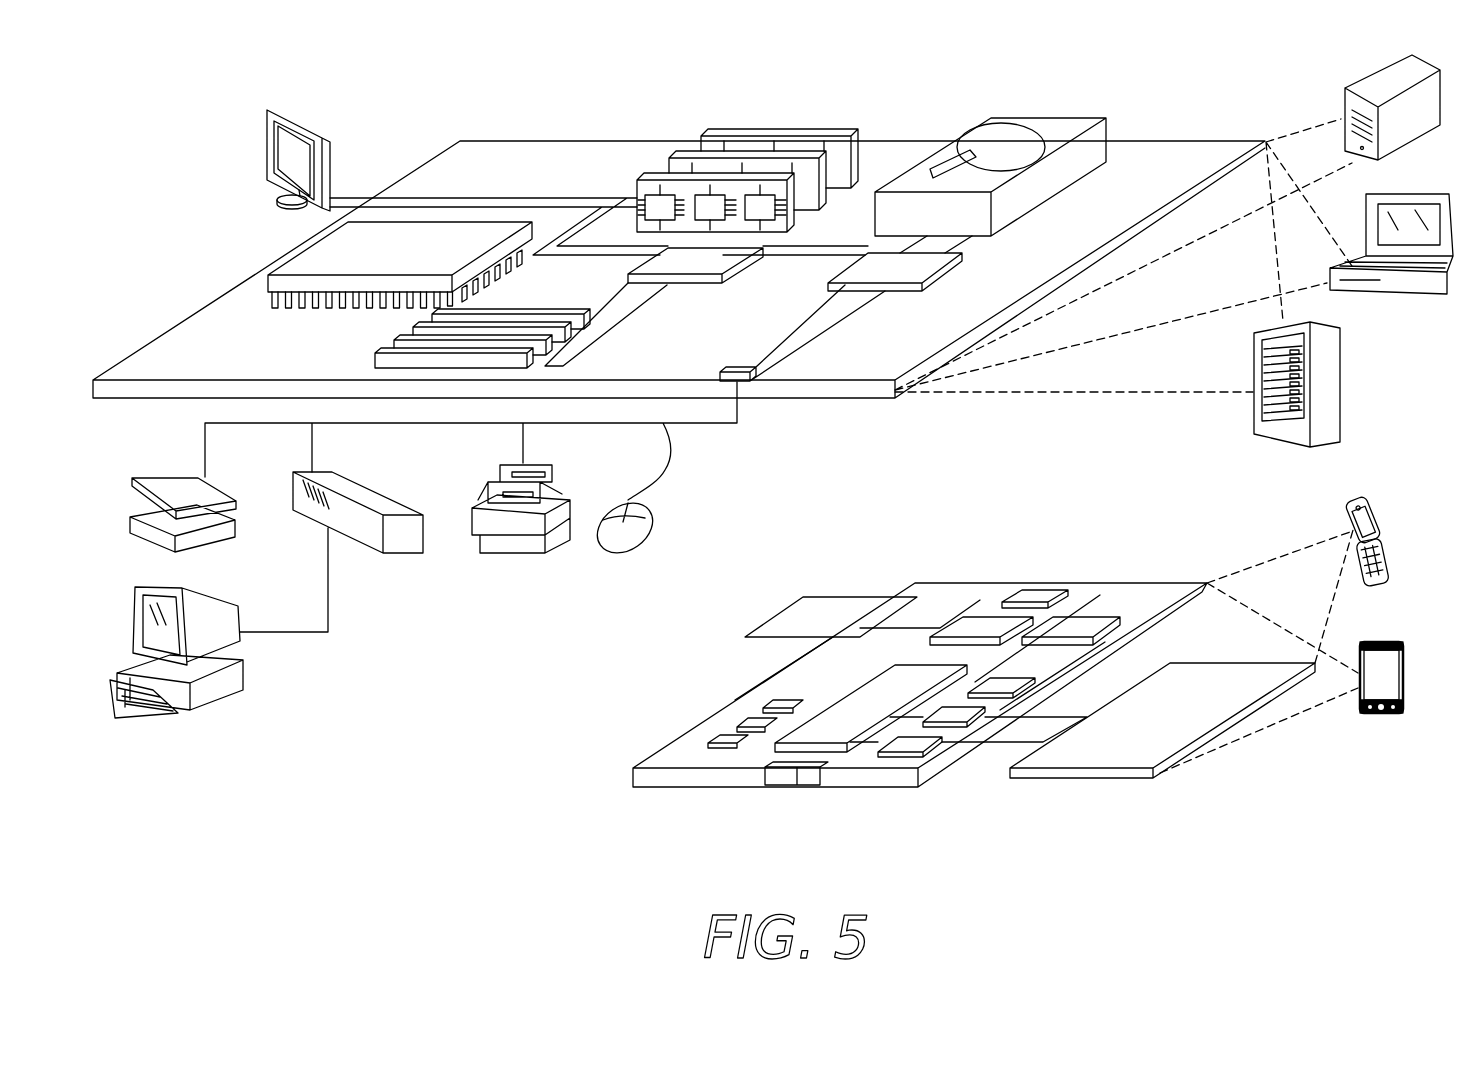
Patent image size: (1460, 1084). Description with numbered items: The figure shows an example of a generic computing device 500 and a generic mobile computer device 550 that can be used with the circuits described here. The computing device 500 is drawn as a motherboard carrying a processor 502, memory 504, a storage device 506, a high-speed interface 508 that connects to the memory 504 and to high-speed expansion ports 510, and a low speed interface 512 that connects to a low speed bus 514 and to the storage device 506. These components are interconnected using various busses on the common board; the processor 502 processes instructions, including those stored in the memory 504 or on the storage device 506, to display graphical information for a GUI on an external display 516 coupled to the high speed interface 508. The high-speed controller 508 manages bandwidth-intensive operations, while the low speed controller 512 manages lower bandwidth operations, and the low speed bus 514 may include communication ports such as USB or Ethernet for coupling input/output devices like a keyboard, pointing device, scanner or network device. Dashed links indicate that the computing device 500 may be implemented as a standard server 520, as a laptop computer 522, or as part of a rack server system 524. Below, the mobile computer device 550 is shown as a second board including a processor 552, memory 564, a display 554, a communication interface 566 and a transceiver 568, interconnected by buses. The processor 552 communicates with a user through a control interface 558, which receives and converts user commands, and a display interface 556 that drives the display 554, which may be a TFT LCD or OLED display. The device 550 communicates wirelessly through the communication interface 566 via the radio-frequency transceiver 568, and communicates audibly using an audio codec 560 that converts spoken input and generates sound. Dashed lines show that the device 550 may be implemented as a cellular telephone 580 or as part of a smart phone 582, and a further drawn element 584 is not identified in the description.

The computing device 500 is at (406, 82).
The processor 502 is at (294, 257).
The memory 504 is at (783, 134).
The storage device 506 is at (1036, 116).
The high-speed interface 508 is at (709, 258).
The high-speed expansion ports 510 is at (406, 340).
The low speed interface 512 is at (867, 266).
The low speed bus 514 is at (742, 372).
The display 516 is at (271, 106).
The standard server 520 is at (1369, 84).
The laptop computer 522 is at (1428, 192).
The rack server system 524 is at (1342, 381).
The mobile computer device 550 is at (1258, 786).
The processor 552 is at (837, 713).
The display 554 is at (1203, 680).
The display interface 556 is at (950, 745).
The control interface 558 is at (963, 713).
The audio codec 560 is at (1007, 680).
The memory 564 is at (740, 722).
The communication interface 566 is at (980, 620).
The transceiver 568 is at (1082, 620).
The cellular telephone 580 is at (1038, 593).
The smart phone 582 is at (898, 597).
The display module 584 is at (808, 597).